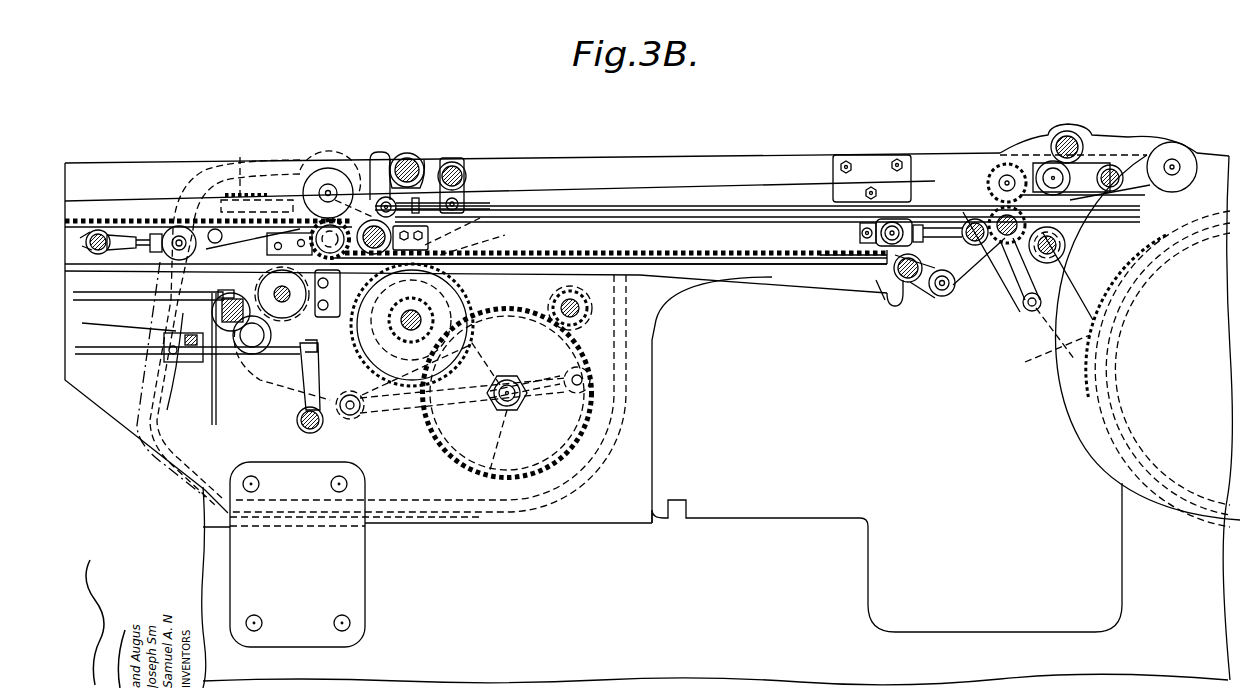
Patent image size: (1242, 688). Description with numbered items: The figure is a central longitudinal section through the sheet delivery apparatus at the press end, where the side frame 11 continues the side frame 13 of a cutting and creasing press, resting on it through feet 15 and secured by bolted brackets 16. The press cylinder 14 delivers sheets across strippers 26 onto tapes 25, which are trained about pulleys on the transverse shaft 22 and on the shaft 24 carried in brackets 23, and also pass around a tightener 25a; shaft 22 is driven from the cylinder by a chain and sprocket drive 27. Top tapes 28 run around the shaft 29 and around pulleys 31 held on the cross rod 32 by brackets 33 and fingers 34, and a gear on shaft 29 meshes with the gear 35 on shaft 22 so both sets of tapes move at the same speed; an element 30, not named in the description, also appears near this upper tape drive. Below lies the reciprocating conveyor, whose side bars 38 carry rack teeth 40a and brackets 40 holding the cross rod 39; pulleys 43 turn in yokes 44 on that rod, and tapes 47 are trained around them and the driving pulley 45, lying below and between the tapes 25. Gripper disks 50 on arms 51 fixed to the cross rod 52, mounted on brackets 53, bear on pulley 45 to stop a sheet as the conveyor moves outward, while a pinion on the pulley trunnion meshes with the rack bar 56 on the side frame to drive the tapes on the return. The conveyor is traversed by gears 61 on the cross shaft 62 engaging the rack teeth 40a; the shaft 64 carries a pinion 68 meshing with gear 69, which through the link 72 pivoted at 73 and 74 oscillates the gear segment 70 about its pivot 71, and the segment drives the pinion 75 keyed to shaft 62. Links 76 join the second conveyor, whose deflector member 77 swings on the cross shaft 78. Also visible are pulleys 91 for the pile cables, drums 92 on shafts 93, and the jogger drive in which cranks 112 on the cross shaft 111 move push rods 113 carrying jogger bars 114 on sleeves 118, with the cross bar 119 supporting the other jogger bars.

The side frame 11 is at (613, 162).
The side frame of press 13 is at (780, 530).
The cylinder 14 is at (1075, 410).
The feet 15 is at (643, 457).
The bolted brackets 16 is at (357, 561).
The transverse shaft 22 is at (998, 242).
The brackets 23 is at (327, 304).
The shaft 24 is at (375, 152).
The tapes 25 is at (745, 200).
The tightener 25a is at (900, 306).
The strippers 26 is at (1126, 317).
The chain and sprocket drive 27 is at (962, 200).
The top tapes 28 is at (668, 188).
The shaft 29 is at (1007, 165).
The roller assembly 30 is at (985, 150).
The pulleys 31 is at (388, 170).
The cross rod 32 is at (460, 168).
The brackets 33 is at (462, 195).
The fingers 34 is at (470, 206).
The gear 35 is at (1028, 310).
The side bars 38 is at (572, 215).
The cross rod 39 is at (955, 292).
The brackets 40 is at (936, 222).
The rack teeth 40a is at (783, 280).
The pulleys 43 is at (858, 232).
The yokes 44 is at (913, 205).
The driving pulley 45 is at (284, 300).
The tapes 47 is at (783, 208).
The gripper disks 50 is at (316, 172).
The arms 51 is at (333, 183).
The cross rod 52 is at (413, 153).
The brackets 53 is at (423, 166).
The rack bar 56 is at (150, 205).
The gears 61 is at (462, 308).
The cross shaft 62 is at (410, 332).
The cross shaft 64 is at (557, 296).
The pinion 68 is at (600, 312).
The gear 69 is at (448, 455).
The gear segment 70 is at (240, 175).
The pivot 71 is at (255, 355).
The link 72 is at (395, 412).
The pivot 73 is at (350, 417).
The pivot 74 is at (531, 400).
The pinion 75 is at (411, 316).
The links 76 is at (268, 247).
The deflector member 77 is at (250, 230).
The cross shaft 78 is at (180, 226).
The pulleys 91 is at (218, 313).
The drums 92 is at (218, 292).
The shafts 93 is at (265, 345).
The cross shaft 111 is at (304, 435).
The cranks 112 is at (327, 375).
The push rods 113 is at (103, 354).
The jogger bars 114 is at (193, 362).
The sleeves 118 is at (186, 367).
The cross bar 119 is at (220, 350).